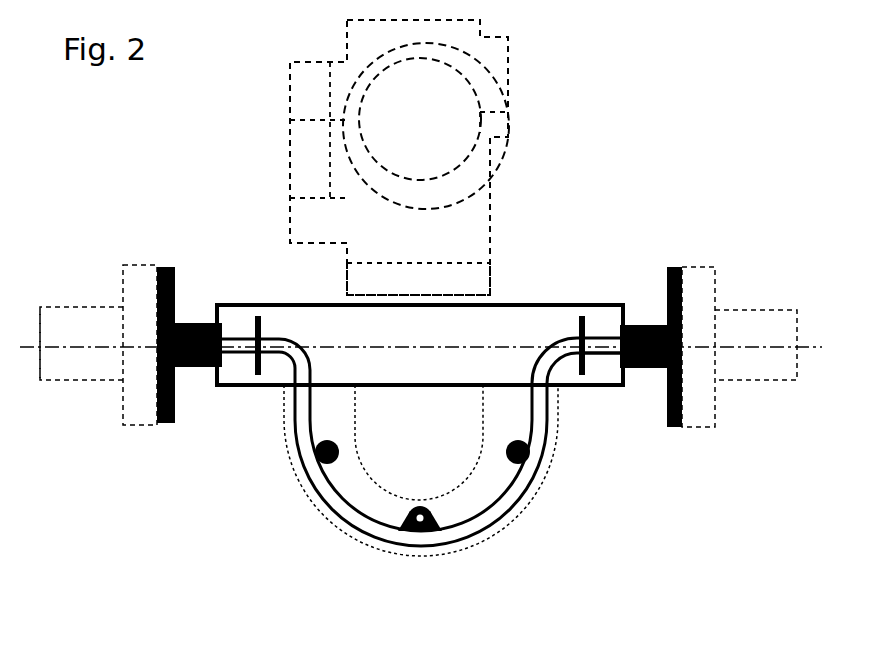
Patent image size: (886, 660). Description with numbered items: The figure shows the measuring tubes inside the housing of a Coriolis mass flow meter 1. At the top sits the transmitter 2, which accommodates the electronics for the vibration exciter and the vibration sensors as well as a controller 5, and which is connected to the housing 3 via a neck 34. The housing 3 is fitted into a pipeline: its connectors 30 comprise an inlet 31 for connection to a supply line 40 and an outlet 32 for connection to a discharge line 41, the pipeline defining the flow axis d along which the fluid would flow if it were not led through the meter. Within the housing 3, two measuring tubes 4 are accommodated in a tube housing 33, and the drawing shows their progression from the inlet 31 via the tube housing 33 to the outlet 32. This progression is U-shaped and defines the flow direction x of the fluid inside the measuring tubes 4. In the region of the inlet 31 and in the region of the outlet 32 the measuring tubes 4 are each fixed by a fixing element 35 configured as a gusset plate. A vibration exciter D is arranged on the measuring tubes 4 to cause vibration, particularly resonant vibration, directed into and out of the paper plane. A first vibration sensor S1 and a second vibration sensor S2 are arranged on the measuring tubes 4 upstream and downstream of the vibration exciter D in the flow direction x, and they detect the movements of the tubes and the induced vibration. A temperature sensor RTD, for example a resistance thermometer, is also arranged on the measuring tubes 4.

The Coriolis mass flow meter 1 is at (652, 138).
The transmitter 2 is at (417, 115).
The housing 3 is at (293, 298).
The measuring tubes 4 is at (356, 530).
The controller 5 is at (300, 83).
The connectors 30 is at (203, 362).
The inlet 31 is at (158, 275).
The outlet 32 is at (673, 276).
The tube housing 33 is at (557, 440).
The neck 34 is at (457, 277).
The fixing element 35 is at (247, 320).
The supply line 40 is at (94, 327).
The discharge line 41 is at (753, 327).
The first vibration sensor S1 is at (327, 452).
The second vibration sensor S2 is at (518, 455).
The vibration exciter D is at (423, 530).
The temperature sensor RTD is at (595, 358).
The flow axis d is at (90, 347).
The flow direction x is at (112, 474).